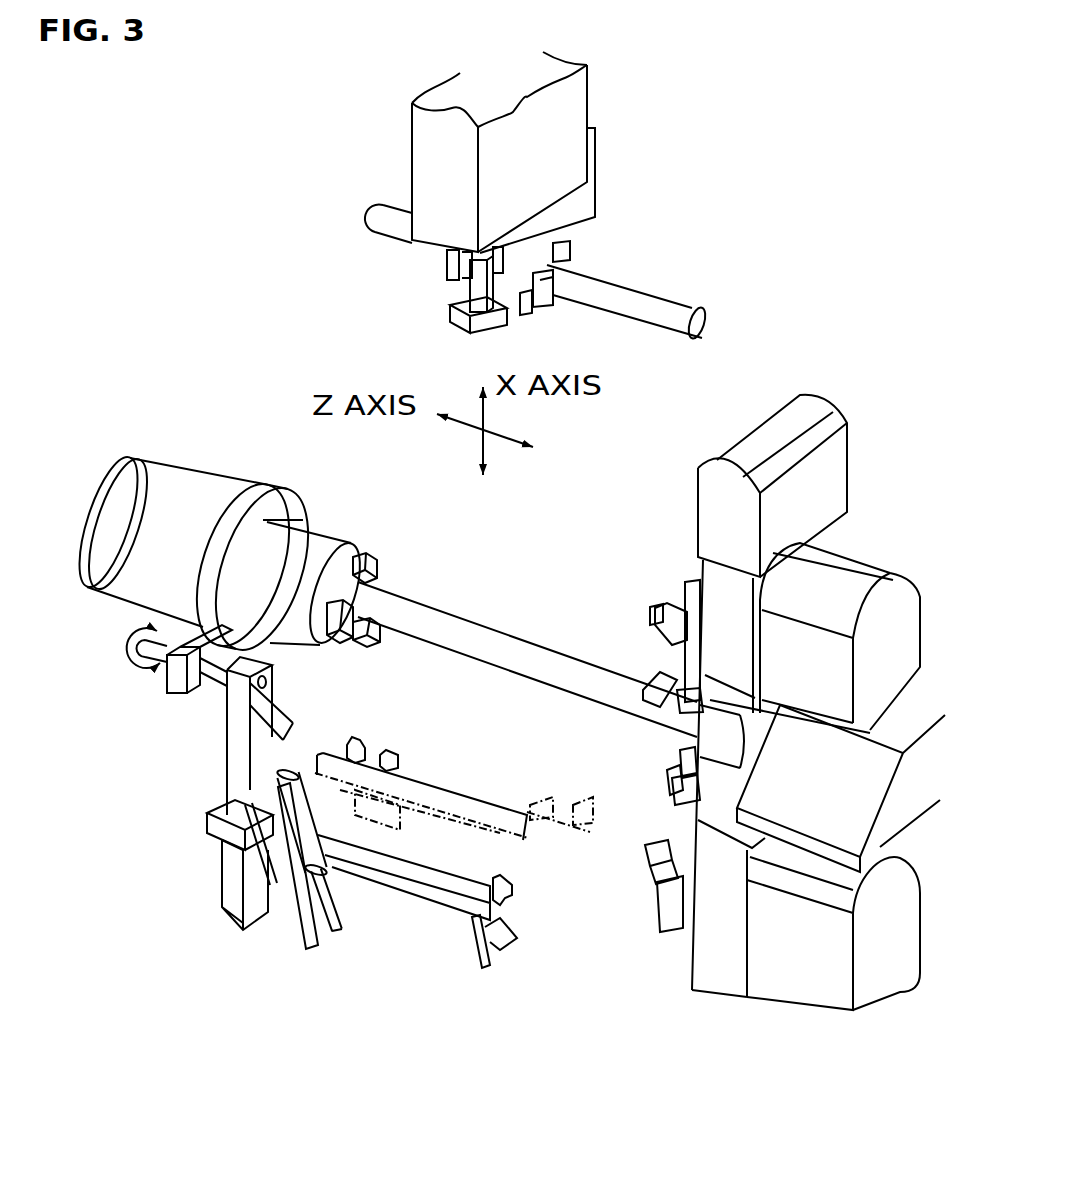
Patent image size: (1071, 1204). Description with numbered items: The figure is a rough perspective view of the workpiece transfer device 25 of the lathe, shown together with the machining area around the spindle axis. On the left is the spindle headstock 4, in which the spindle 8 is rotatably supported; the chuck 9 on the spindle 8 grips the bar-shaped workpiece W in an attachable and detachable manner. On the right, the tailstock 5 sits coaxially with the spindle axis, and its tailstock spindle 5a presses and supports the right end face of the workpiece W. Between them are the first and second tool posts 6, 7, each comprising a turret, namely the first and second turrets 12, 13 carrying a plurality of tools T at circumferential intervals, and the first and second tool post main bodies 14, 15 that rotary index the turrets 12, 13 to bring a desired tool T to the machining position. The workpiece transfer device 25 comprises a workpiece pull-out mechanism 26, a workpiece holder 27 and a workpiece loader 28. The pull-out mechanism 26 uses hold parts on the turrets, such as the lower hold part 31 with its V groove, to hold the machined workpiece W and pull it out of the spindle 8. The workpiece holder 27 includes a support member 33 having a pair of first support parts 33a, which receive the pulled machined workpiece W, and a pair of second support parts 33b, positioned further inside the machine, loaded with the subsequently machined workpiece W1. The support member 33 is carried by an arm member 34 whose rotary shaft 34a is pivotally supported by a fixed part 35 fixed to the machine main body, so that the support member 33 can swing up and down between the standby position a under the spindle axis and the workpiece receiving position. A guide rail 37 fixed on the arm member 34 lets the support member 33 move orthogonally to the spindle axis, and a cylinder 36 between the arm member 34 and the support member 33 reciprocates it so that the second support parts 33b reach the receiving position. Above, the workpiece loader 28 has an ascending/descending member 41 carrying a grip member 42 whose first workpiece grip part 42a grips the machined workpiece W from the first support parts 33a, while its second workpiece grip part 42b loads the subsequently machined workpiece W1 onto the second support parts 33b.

The spindle headstock 4 is at (199, 465).
The tailstock 5 is at (723, 723).
The tailstock spindle 5a is at (690, 735).
The first tool post 6 is at (670, 537).
The second tool post 7 is at (667, 973).
The spindle 8 is at (333, 540).
The chuck 9 is at (383, 562).
The first turret 12 is at (677, 590).
The second turret 13 is at (658, 887).
The first tool post main body 14 is at (697, 568).
The second tool post main body 15 is at (688, 980).
The workpiece transfer device 25 is at (768, 275).
The workpiece pull-out mechanism 26 is at (655, 732).
The workpiece holder 27 is at (197, 855).
The workpiece loader 28 is at (622, 162).
The lower hold part 31 is at (680, 765).
The support member 33 is at (467, 825).
The first support parts 33a is at (345, 735).
The second support parts 33b is at (377, 748).
The arm member 34 is at (240, 727).
The rotary shaft 34a is at (160, 675).
The fixed part 35 is at (175, 695).
The cylinder 36 is at (272, 893).
The guide rail 37 is at (217, 802).
The ascending/descending member 41 is at (592, 92).
The grip member 42 is at (600, 205).
The first workpiece grip part 42a is at (465, 325).
The second workpiece grip part 42b is at (573, 257).
The workpiece W is at (468, 657).
The subsequently machined workpiece W1 is at (630, 280).
The tool T is at (653, 688).
The standby position a is at (240, 940).